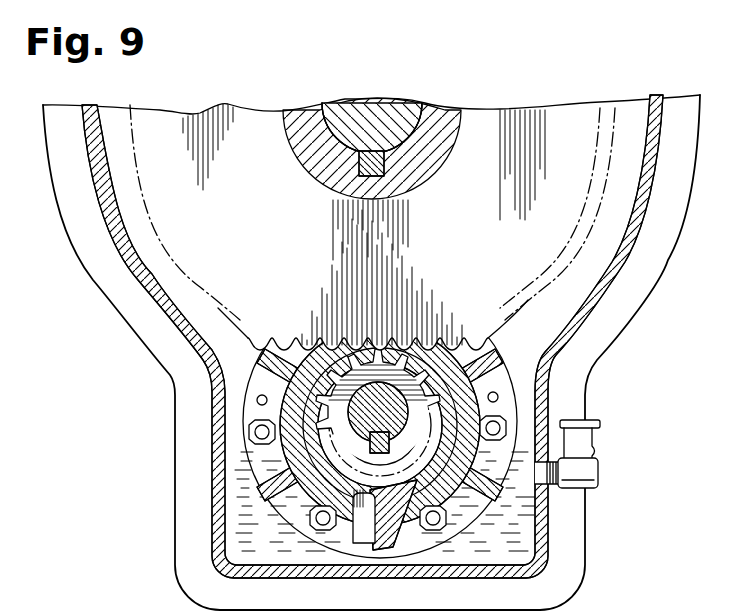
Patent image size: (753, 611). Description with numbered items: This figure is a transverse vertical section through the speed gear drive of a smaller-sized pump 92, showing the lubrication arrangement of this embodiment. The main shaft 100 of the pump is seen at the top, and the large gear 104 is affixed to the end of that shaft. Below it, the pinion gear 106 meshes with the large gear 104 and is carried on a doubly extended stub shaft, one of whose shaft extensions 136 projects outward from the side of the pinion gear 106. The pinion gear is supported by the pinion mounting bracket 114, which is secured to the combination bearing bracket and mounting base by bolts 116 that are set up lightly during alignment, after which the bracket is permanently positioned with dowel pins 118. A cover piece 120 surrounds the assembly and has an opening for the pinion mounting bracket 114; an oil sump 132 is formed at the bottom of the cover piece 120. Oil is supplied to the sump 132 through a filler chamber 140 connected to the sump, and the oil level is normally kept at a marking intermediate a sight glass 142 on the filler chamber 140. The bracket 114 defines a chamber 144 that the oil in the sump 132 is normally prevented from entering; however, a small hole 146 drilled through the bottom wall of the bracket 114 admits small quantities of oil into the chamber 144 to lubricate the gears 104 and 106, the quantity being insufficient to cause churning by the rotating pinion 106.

The pump 92 is at (549, 110).
The main shaft 100 is at (395, 80).
The large gear 104 is at (613, 120).
The pinion gear 106 is at (376, 374).
The pinion mounting bracket 114 is at (408, 500).
The bolts 116 is at (252, 432).
The dowel pins 118 is at (257, 396).
The cover piece 120 is at (675, 226).
The oil sump 132 is at (258, 556).
The shaft extension 136 is at (358, 388).
The filler chamber 140 is at (586, 471).
The sight glass 142 is at (599, 443).
The chamber 144 is at (453, 417).
The small hole 146 is at (355, 503).